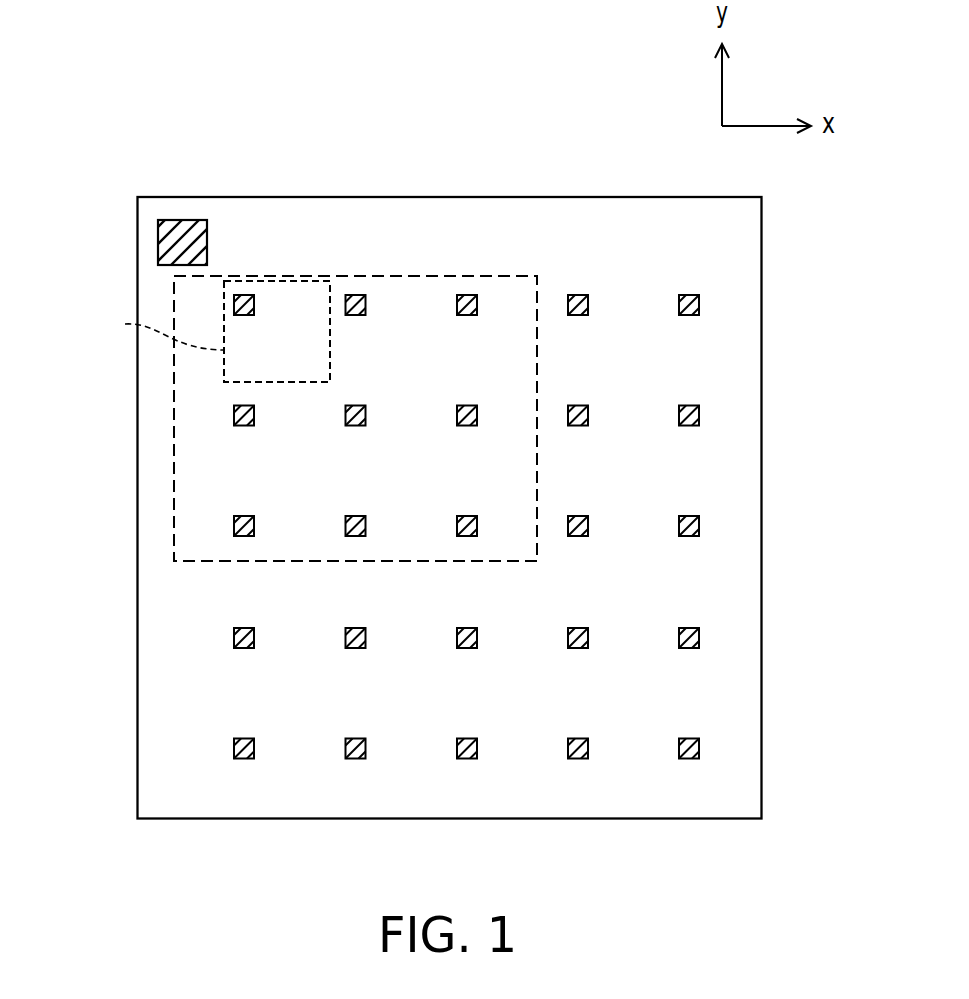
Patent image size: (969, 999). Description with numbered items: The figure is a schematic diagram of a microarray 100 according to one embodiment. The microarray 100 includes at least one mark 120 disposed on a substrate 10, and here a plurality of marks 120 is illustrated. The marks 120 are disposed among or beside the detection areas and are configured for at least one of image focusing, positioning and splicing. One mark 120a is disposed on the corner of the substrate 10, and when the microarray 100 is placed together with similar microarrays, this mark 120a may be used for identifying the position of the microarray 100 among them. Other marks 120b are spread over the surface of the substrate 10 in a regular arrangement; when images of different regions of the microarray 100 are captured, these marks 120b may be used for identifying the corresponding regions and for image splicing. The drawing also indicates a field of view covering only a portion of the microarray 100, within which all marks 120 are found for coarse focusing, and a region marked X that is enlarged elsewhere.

The microarray 100 is at (461, 520).
The substrate 10 is at (737, 578).
The mark 120 is at (369, 483).
The mark 120a is at (173, 242).
The marks 120b is at (233, 638).